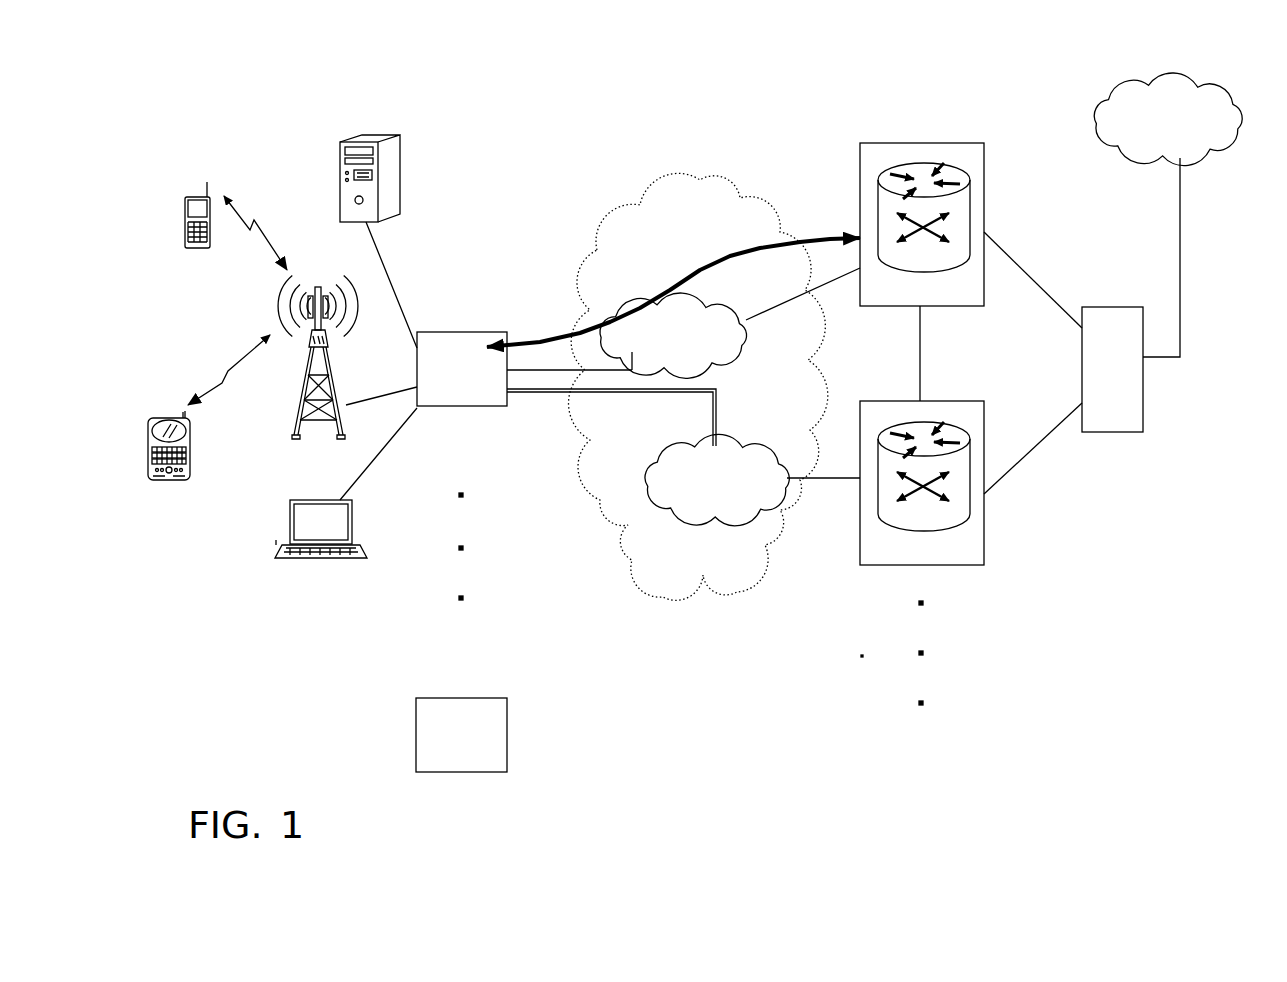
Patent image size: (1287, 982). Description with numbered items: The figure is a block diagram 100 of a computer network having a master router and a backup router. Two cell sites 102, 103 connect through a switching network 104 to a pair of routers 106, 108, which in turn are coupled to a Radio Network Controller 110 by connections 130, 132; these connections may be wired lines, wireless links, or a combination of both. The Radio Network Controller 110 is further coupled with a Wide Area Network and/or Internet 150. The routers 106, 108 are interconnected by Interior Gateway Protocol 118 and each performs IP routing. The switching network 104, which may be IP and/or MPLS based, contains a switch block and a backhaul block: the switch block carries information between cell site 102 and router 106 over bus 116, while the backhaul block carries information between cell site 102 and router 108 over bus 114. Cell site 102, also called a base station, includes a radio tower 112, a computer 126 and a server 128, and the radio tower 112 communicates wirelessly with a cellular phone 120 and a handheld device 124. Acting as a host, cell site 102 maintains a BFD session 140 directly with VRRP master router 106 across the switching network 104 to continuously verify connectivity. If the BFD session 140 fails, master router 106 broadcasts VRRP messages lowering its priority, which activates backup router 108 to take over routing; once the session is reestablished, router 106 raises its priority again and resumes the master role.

The block diagram 100 is at (265, 60).
The cell site 102 is at (490, 330).
The cell site 103 is at (480, 697).
The switching network 104 is at (672, 181).
The router 106 is at (907, 294).
The router 108 is at (907, 553).
The Radio Network Controller 110 is at (1096, 391).
The radio tower 112 is at (326, 437).
The bus 114 is at (566, 394).
The bus 116 is at (573, 370).
The Interior Gateway Protocol 118 is at (922, 378).
The cellular phone 120 is at (200, 196).
The handheld device 124 is at (191, 471).
The computer 126 is at (304, 532).
The server 128 is at (400, 199).
The connection 130 is at (1040, 291).
The connection 132 is at (1035, 447).
The BFD session 140 is at (838, 238).
The Wide Area Network and/or Internet 150 is at (1152, 130).